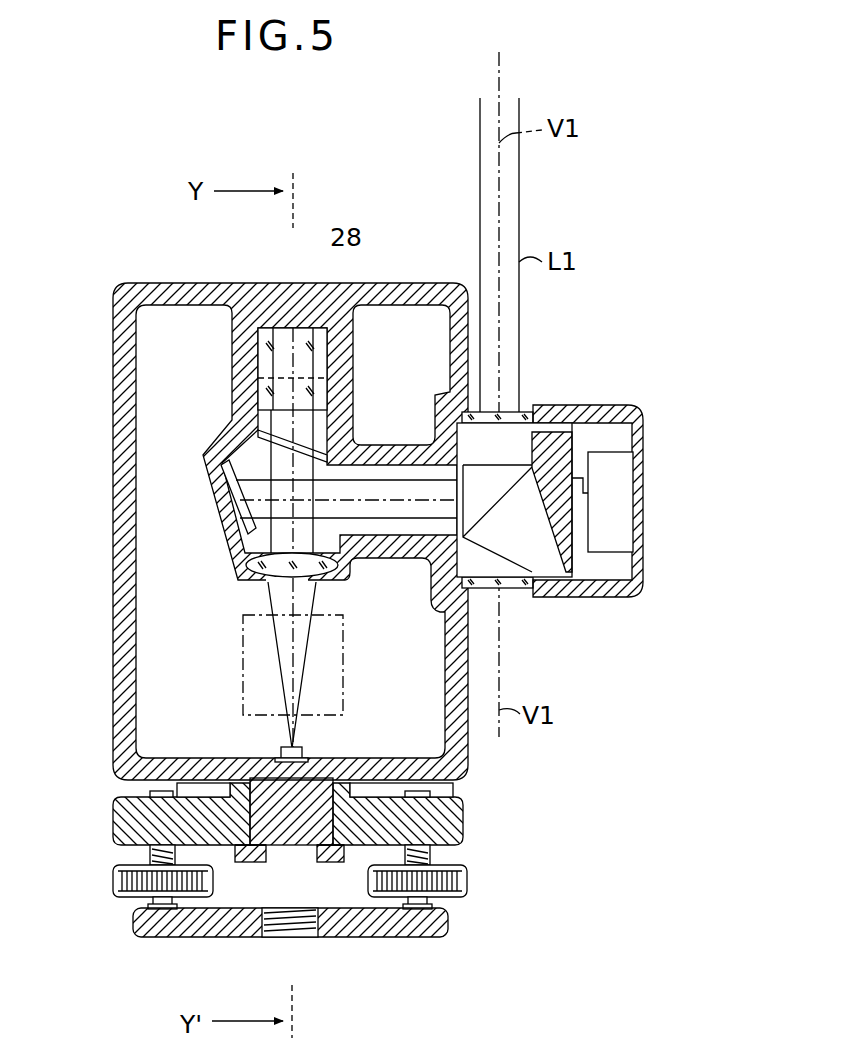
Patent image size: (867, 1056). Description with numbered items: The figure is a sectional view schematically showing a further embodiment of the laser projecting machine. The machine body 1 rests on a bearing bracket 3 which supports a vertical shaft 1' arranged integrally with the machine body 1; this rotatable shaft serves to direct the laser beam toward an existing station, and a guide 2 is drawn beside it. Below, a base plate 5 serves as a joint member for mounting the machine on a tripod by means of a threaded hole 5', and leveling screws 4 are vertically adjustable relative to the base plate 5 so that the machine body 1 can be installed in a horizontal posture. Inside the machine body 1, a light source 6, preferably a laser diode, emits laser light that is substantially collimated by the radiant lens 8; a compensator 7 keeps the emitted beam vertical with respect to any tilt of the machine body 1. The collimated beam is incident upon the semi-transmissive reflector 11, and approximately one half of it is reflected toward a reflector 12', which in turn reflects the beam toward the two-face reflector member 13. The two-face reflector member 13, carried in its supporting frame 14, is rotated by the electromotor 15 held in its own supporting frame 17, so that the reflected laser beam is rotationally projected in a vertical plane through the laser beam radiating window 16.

The machine body 1 is at (255, 531).
The vertical shaft 1' is at (282, 881).
The guide 2 is at (340, 858).
The bearing bracket 3 is at (113, 810).
The leveling screws 4 is at (113, 882).
The base plate 5 is at (241, 916).
The threaded hole 5' is at (312, 962).
The light source 6 is at (302, 750).
The compensator 7 is at (325, 663).
The radiant lens 8 is at (267, 583).
The semi-transmissive reflector 11 is at (401, 375).
The reflector 12' is at (238, 436).
The two-face reflector member 13 is at (533, 530).
The supporting frame 14 is at (565, 448).
The electromotor 15 is at (613, 478).
The laser beam radiating window 16 is at (513, 592).
The supporting frame 17 is at (627, 562).